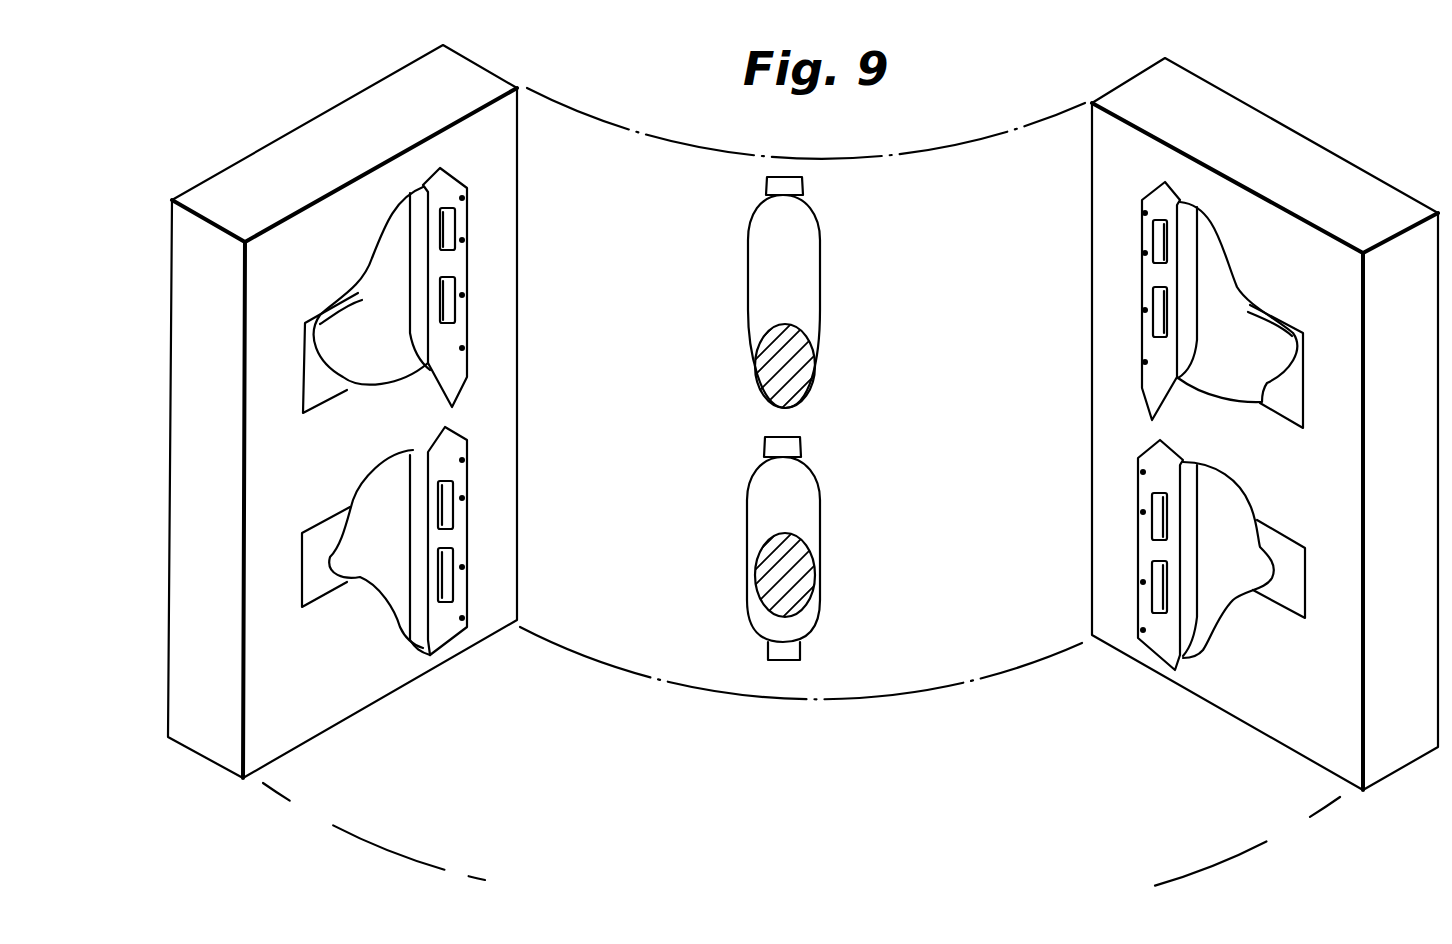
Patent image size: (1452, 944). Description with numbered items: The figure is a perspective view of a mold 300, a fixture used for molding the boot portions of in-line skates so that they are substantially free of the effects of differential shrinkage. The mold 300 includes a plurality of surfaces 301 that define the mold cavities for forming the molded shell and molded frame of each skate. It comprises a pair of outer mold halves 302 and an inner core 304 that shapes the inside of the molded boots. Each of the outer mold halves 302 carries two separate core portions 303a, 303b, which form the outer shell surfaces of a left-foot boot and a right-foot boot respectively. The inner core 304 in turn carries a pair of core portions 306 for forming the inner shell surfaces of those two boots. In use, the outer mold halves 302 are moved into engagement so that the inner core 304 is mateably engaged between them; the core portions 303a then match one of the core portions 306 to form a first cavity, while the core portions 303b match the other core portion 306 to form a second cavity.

The mold 300 is at (805, 720).
The surfaces 301 is at (822, 243).
The outer mold halves 302 is at (457, 86).
The core portions 303a is at (477, 537).
The core portions 303b is at (478, 274).
The inner core 304 is at (814, 198).
The core portions 306 is at (820, 313).